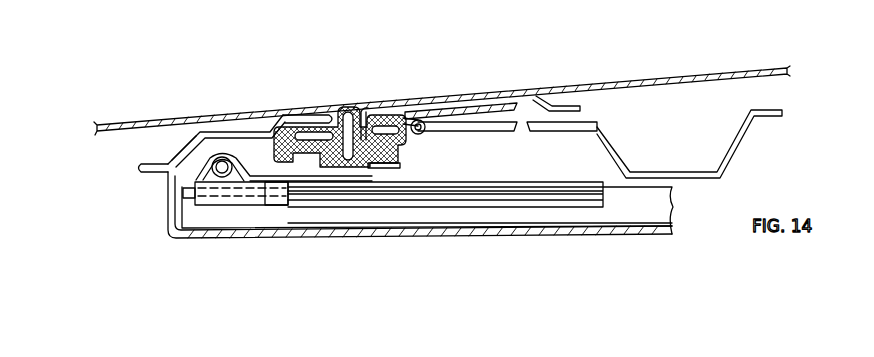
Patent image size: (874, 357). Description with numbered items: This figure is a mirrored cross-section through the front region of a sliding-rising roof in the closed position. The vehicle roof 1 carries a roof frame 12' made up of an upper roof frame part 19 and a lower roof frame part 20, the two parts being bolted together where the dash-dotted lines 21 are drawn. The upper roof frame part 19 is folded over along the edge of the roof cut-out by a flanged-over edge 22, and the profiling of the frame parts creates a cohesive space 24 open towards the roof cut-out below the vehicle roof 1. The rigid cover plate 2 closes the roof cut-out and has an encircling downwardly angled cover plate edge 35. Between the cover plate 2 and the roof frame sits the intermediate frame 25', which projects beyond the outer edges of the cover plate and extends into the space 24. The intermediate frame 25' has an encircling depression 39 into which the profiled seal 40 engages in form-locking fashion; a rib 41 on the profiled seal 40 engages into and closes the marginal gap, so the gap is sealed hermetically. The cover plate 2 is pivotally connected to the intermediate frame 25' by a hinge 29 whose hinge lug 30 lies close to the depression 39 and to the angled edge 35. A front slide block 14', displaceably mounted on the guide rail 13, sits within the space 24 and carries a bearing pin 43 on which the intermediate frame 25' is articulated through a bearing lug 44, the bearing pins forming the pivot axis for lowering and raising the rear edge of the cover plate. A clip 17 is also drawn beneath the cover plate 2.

The vehicle roof 1 is at (177, 122).
The cover plate 2 is at (713, 76).
The roof frame 12' is at (389, 225).
The guide rail 13 is at (527, 192).
The front slide block 14' is at (255, 233).
The clip 17 is at (564, 95).
The upper roof frame part 19 is at (182, 150).
The lower roof frame part 20 is at (236, 238).
The dash-dotted lines 21 is at (143, 176).
The flanged-over edge 22 is at (310, 122).
The cohesive space 24 is at (253, 150).
The intermediate frame 25' is at (689, 142).
The hinge 29 is at (438, 121).
The hinge lug 30 is at (421, 122).
The downwardly angled cover plate edge 35 is at (374, 117).
The depression 39 is at (386, 169).
The profiled seal 40 is at (365, 165).
The rib 41 is at (348, 112).
The bearing pin 43 is at (222, 167).
The bearing lug 44 is at (263, 202).